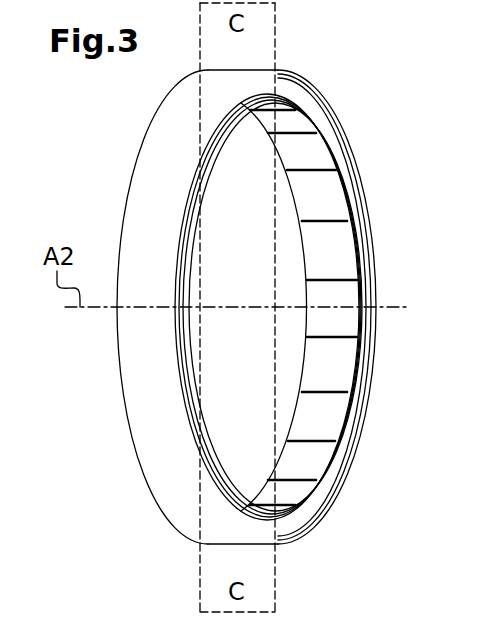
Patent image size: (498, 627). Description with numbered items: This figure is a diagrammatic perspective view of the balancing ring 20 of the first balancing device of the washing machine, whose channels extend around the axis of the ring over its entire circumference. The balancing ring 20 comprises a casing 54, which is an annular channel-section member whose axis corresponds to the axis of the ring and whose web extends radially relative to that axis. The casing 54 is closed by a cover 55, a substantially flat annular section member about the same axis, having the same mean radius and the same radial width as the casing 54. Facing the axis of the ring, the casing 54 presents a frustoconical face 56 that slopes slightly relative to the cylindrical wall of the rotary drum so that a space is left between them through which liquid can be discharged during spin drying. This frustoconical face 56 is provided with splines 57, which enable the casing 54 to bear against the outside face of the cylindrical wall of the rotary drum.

The balancing ring 20 is at (348, 88).
The casing 54 is at (135, 450).
The cover 55 is at (305, 515).
The frustoconical face 56 is at (328, 250).
The splines 57 is at (297, 133).